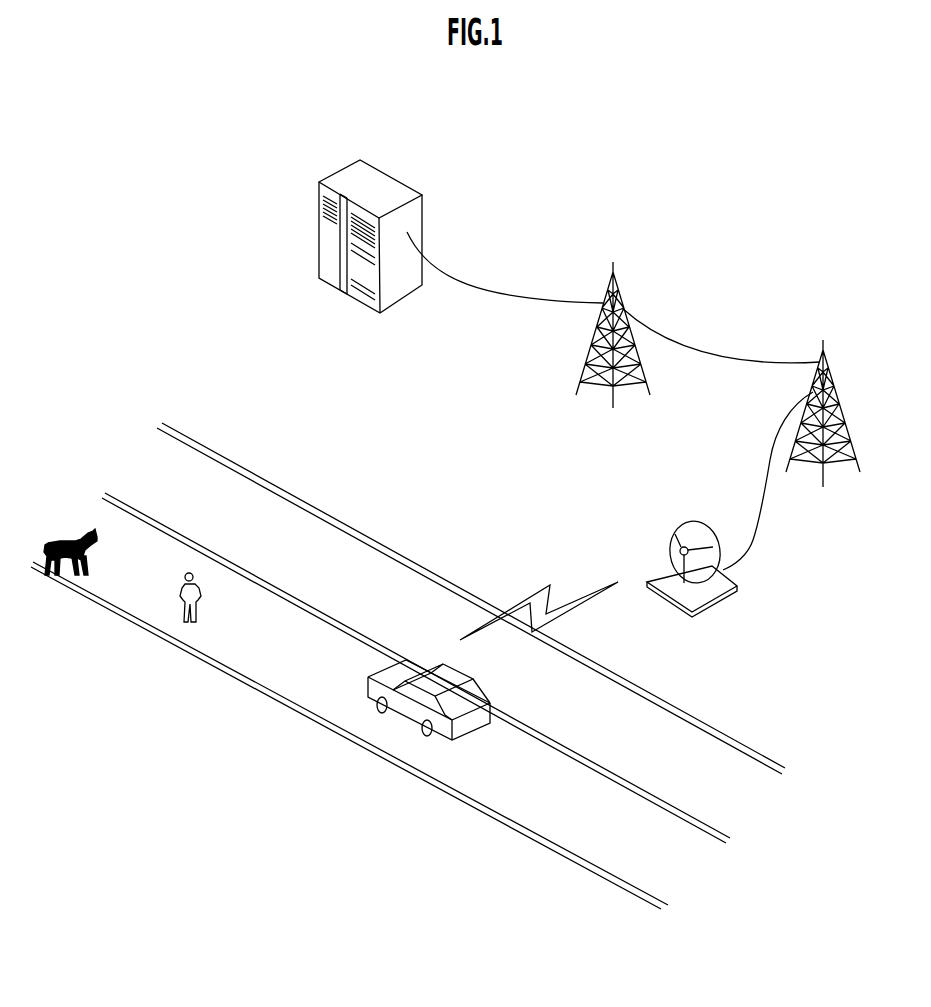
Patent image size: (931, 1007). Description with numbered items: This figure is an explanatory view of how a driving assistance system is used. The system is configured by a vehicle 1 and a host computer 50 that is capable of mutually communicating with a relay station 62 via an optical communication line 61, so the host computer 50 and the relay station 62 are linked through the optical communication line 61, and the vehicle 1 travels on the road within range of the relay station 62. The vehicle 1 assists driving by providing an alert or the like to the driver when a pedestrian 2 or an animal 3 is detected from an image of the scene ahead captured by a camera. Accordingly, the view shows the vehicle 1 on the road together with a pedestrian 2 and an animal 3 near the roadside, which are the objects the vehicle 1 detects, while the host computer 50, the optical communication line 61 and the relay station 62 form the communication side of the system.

The vehicle 1 is at (478, 695).
The pedestrian 2 is at (182, 595).
The animal 3 is at (62, 570).
The host computer 50 is at (387, 192).
The optical communication line 61 is at (679, 314).
The relay station 62 is at (672, 532).